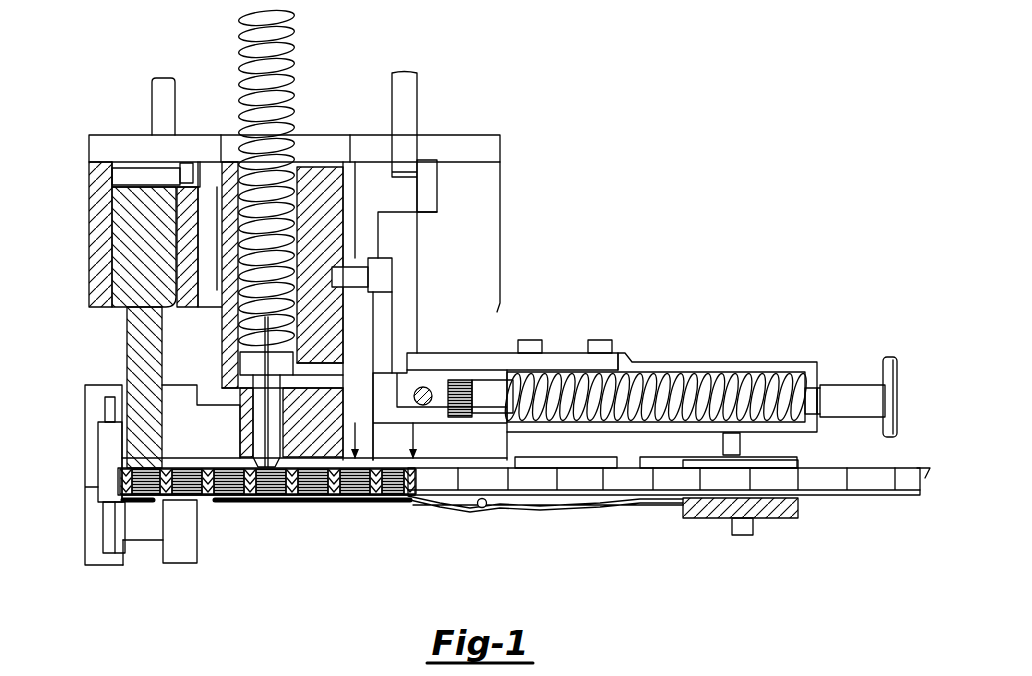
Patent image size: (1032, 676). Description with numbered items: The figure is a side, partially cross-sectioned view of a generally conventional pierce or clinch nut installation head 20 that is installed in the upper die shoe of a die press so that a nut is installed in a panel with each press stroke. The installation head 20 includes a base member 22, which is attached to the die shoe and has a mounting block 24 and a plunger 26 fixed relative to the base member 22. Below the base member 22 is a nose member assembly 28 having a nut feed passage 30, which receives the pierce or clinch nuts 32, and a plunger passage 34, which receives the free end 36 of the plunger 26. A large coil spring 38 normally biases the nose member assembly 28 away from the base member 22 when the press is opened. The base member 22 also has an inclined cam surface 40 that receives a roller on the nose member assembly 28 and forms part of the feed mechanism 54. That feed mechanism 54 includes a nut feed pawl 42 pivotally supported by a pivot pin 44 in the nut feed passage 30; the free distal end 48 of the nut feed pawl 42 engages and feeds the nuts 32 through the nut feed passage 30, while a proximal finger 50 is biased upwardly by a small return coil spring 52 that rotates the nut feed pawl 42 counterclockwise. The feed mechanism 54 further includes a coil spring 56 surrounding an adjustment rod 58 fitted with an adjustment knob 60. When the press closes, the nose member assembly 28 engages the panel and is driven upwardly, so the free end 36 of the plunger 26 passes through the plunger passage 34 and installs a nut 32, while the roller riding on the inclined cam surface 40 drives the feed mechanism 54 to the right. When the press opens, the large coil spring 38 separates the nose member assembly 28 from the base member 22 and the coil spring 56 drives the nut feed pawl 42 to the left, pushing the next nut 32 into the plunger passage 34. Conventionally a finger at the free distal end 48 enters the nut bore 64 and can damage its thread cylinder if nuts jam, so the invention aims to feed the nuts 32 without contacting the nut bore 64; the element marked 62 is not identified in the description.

The pierce or clinch nut installation head 20 is at (66, 131).
The base member 22 is at (89, 187).
The mounting block 24 is at (127, 140).
The plunger 26 is at (115, 242).
The nose member assembly 28 is at (88, 532).
The nut feed passage 30 is at (445, 486).
The pierce or clinch nuts 32 is at (585, 480).
The plunger passage 34 is at (163, 520).
The free end of the plunger 36 is at (145, 402).
The large coil spring 38 is at (297, 58).
The inclined cam surface 40 is at (405, 440).
The nut feed pawl 42 is at (397, 397).
The pivot pin 44 is at (427, 387).
The free distal end of the nut feed pawl 48 is at (405, 440).
The proximal finger 50 is at (458, 378).
The small return coil spring 52 is at (462, 415).
The feed mechanism 54 is at (685, 336).
The coil spring 56 is at (757, 378).
The adjustment rod 58 is at (812, 416).
The adjustment knob 60 is at (852, 380).
The lever 62 is at (457, 512).
The nut bore 64 is at (183, 487).